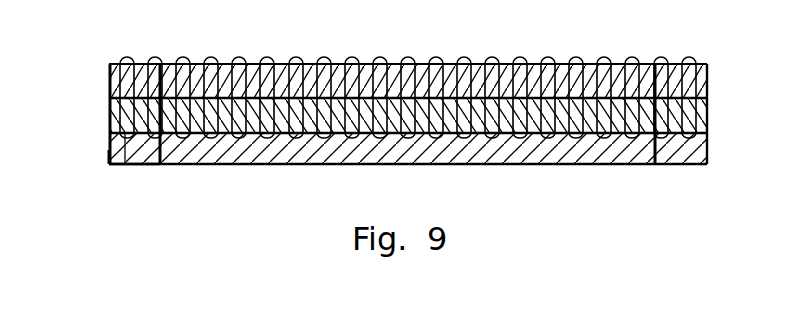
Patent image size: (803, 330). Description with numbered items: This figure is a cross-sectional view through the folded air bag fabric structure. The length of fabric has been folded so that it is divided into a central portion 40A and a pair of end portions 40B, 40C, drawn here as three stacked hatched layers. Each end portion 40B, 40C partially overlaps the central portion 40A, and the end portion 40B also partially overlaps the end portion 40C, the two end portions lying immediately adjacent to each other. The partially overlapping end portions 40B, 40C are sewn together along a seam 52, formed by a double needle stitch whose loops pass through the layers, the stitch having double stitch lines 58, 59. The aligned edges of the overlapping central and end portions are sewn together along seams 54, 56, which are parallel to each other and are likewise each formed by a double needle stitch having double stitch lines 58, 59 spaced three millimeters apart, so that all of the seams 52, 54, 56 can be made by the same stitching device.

The central portion 40A is at (408, 178).
The end portion 40B is at (408, 51).
The end portion 40C is at (699, 114).
The seam 52 is at (408, 71).
The seam 54 is at (698, 144).
The seam 56 is at (110, 187).
The stitch line 58 is at (144, 84).
The stitch line 59 is at (188, 144).